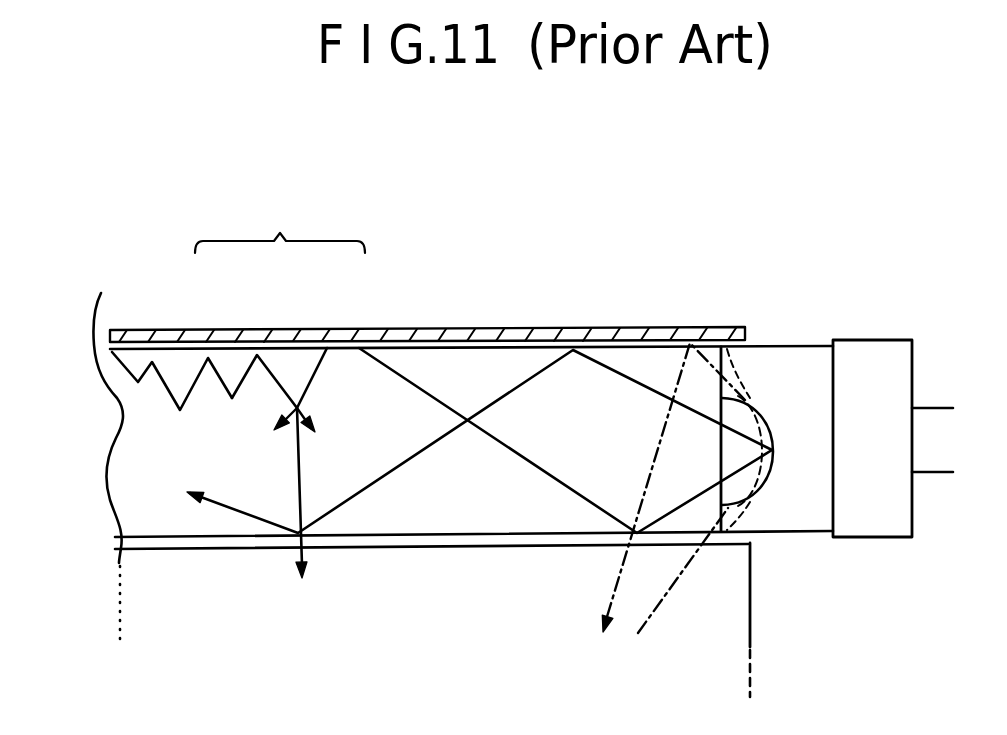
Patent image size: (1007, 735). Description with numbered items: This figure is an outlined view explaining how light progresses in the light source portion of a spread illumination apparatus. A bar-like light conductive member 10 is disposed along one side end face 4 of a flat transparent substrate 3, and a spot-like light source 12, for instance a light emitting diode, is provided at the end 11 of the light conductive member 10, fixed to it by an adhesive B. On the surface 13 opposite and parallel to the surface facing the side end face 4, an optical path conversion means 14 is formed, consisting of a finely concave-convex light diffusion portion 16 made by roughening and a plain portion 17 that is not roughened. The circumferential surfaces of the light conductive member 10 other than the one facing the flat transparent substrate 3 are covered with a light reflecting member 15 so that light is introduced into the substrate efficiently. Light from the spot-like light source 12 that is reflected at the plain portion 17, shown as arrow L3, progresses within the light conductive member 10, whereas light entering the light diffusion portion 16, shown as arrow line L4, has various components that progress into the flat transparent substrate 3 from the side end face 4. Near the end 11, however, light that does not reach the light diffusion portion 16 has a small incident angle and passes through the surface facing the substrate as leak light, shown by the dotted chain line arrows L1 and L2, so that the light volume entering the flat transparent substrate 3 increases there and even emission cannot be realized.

The light conductive member 10 is at (463, 454).
The optical path conversion means 14 is at (238, 302).
The light diffusion portion 16 is at (192, 348).
The plain portion 17 is at (358, 347).
The light reflecting member 15 is at (438, 332).
The surface 13 is at (638, 337).
The adhesive B is at (758, 345).
The spot-like light source 12 is at (798, 360).
The end 11 is at (735, 522).
The flat transparent substrate 3 is at (730, 610).
The side end face 4 is at (527, 537).
The dotted chain line arrow L1 is at (693, 575).
The dotted chain line arrow L2 is at (627, 585).
The arrow L3 is at (388, 473).
The arrow line L4 is at (298, 487).